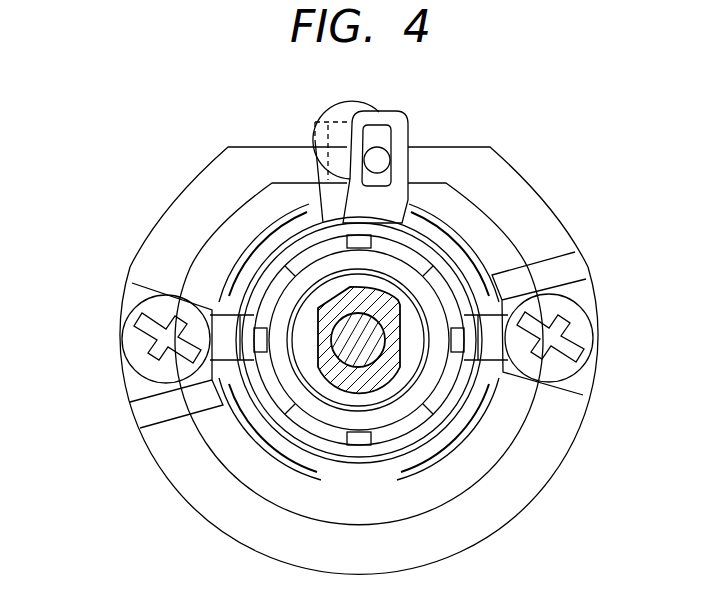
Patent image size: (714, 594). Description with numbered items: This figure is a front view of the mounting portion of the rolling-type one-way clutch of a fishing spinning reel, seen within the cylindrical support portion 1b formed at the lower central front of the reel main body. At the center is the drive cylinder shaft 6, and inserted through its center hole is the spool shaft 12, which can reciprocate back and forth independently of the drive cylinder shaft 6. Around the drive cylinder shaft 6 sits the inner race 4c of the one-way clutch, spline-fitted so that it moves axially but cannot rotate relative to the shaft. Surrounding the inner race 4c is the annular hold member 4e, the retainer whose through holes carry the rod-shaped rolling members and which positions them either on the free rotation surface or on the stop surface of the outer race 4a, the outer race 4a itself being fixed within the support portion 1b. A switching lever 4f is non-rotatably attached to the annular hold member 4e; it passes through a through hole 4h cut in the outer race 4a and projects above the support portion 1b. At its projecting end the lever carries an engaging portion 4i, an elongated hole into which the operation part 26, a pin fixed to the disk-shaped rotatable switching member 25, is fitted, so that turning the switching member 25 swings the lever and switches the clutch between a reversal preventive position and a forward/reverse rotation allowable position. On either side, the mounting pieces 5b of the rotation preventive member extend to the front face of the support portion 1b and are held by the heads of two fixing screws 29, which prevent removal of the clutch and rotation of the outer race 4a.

The support portion 1b is at (517, 192).
The outer race 4a is at (465, 410).
The inner race 4c is at (365, 348).
The annular hold member 4e is at (407, 427).
The switching lever 4f is at (392, 140).
The through hole 4h is at (322, 223).
The engaging portion 4i is at (381, 136).
The mounting pieces 5b is at (228, 340).
The drive cylinder shaft 6 is at (330, 366).
The spool shaft 12 is at (372, 350).
The switching member 25 is at (344, 104).
The operation part 26 is at (376, 160).
The fixing screws 29 is at (163, 310).